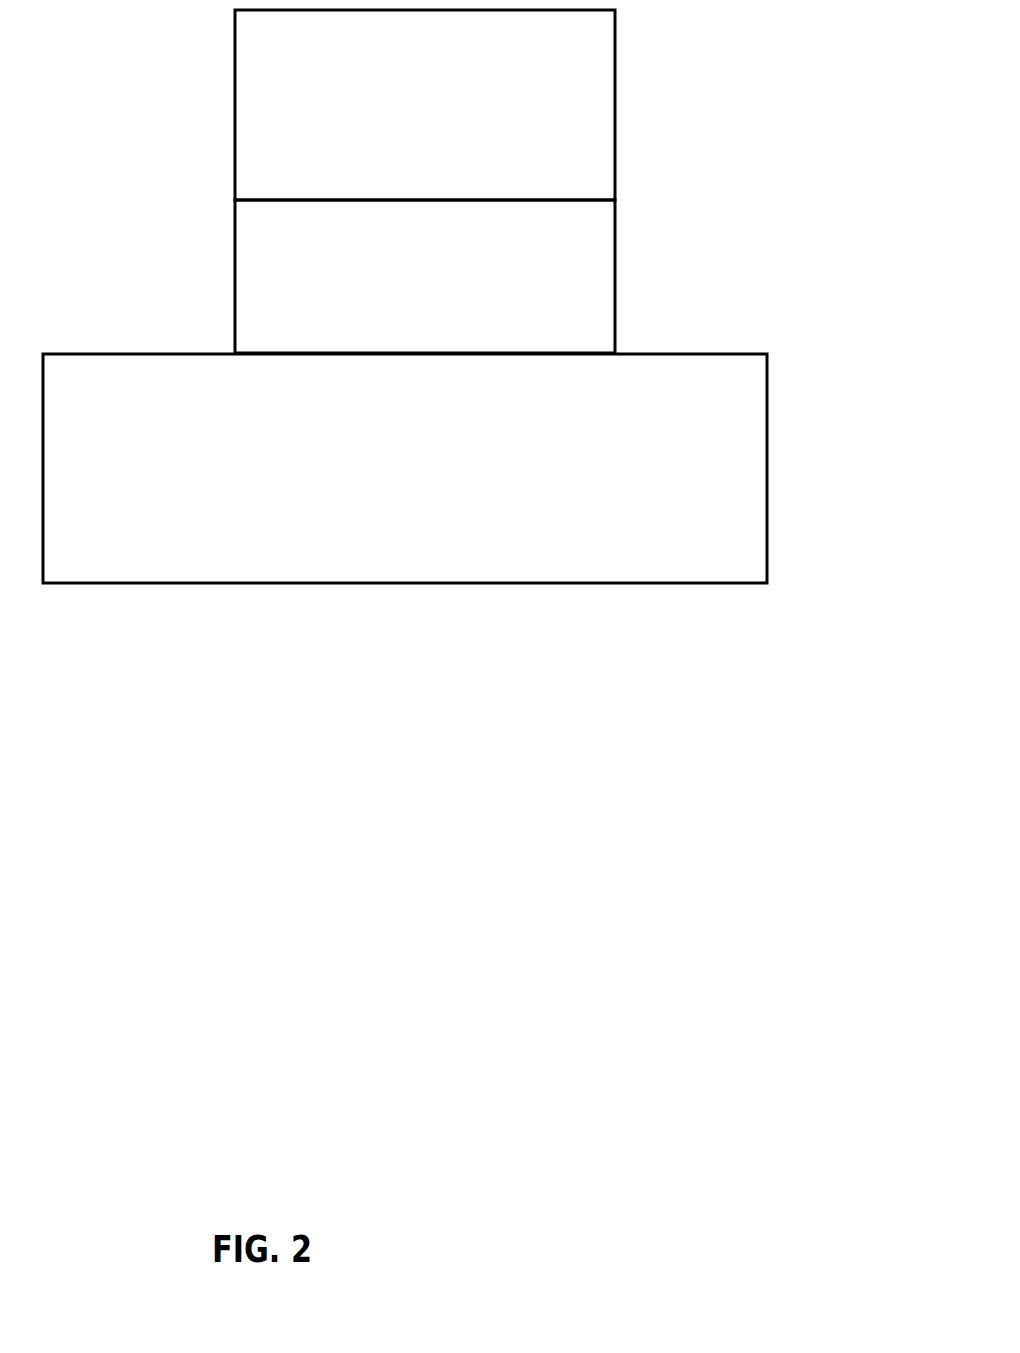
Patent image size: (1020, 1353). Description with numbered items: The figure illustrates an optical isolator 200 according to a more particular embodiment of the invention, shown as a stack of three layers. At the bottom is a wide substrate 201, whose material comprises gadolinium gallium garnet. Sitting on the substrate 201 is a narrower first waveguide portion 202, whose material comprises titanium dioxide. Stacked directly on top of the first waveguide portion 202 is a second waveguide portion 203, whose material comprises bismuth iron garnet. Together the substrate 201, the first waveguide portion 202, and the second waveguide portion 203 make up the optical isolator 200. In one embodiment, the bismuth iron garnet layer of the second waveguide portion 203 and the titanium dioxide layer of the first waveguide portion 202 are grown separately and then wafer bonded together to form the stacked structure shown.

The optical isolator 200 is at (452, 389).
The substrate 201 is at (783, 487).
The first waveguide portion 202 is at (628, 278).
The second waveguide portion 203 is at (628, 126).